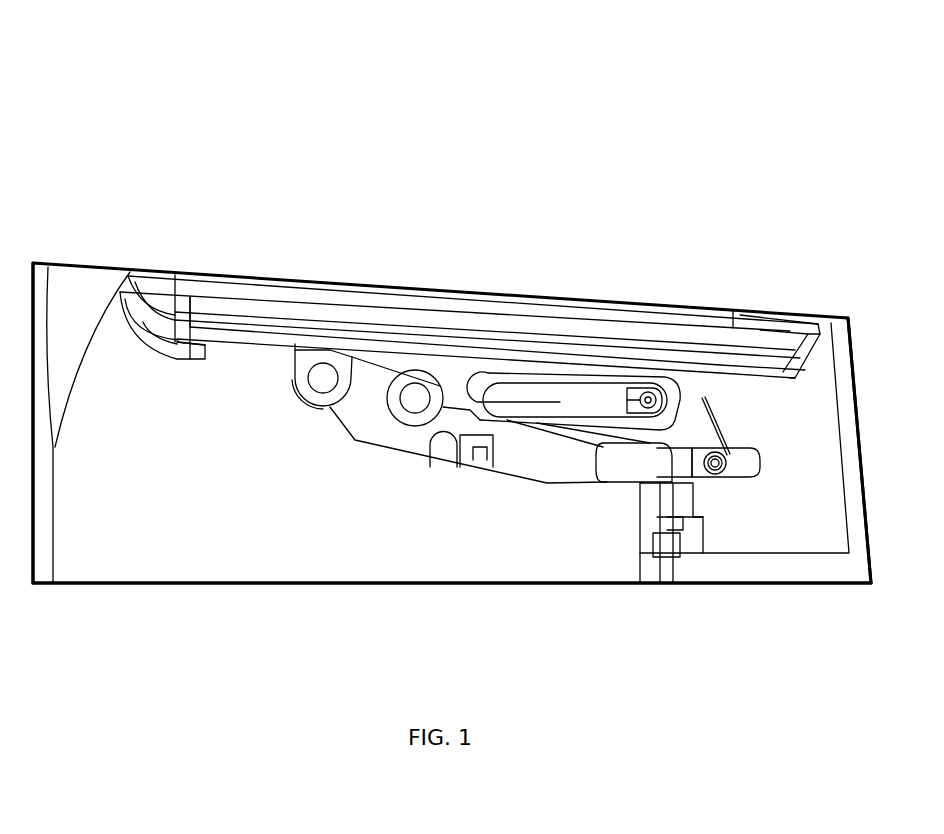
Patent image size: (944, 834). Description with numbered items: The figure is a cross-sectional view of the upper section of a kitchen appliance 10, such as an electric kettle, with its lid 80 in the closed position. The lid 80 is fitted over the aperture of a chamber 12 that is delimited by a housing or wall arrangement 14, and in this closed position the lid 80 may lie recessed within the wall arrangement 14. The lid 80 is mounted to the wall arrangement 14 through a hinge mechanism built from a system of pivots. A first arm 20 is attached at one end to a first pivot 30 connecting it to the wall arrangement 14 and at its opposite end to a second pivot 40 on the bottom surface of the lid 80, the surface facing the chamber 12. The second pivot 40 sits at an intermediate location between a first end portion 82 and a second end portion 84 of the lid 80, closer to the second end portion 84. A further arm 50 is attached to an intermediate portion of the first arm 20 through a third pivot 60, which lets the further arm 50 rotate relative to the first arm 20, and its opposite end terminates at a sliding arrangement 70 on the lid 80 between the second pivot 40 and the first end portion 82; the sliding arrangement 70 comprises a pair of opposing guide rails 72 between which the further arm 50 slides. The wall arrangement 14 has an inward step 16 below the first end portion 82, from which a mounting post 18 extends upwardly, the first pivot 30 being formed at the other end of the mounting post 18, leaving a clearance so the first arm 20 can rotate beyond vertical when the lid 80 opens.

The kitchen appliance 10 is at (142, 93).
The chamber 12 is at (230, 573).
The wall arrangement 14 is at (43, 575).
The inward step 16 is at (799, 573).
The mounting post 18 is at (660, 528).
The first arm 20 is at (390, 437).
The first pivot 30 is at (735, 468).
The second pivot 40 is at (323, 386).
The further arm 50 is at (448, 358).
The third pivot 60 is at (415, 382).
The sliding arrangement 70 is at (563, 385).
The guide rails 72 is at (503, 395).
The lid 80 is at (333, 330).
The first end portion 82 is at (783, 340).
The second end portion 84 is at (184, 312).